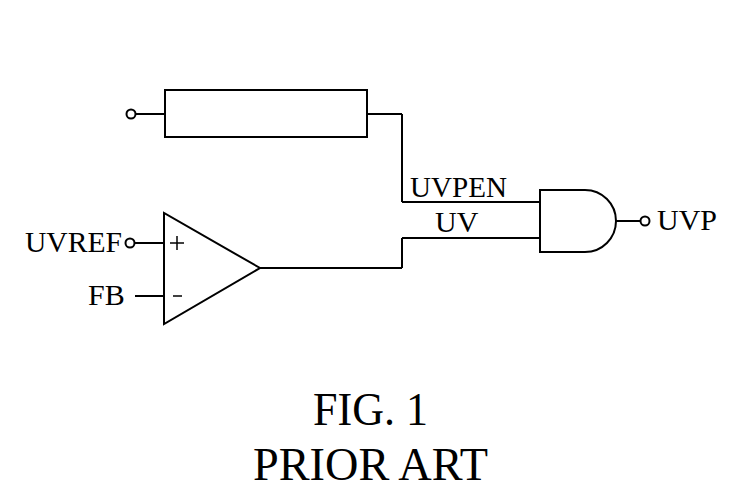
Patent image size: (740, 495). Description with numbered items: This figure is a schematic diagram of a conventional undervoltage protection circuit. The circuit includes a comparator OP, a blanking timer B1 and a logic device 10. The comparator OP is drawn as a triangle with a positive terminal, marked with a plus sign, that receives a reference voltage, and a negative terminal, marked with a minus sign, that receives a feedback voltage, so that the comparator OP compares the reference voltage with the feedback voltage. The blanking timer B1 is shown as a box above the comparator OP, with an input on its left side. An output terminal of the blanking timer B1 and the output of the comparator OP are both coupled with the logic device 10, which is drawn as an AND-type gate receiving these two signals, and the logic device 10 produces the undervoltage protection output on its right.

The blanking timer B1 is at (265, 89).
The comparator OP is at (213, 238).
The logic device 10 is at (585, 198).